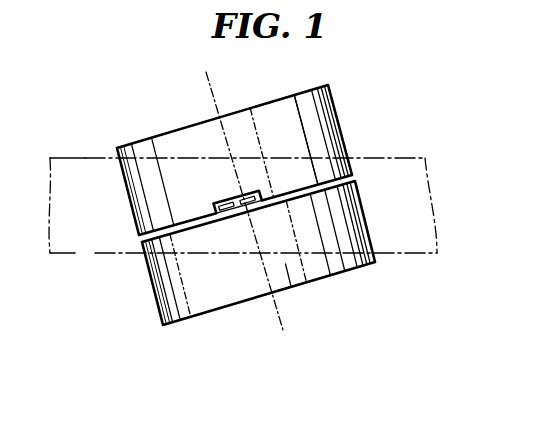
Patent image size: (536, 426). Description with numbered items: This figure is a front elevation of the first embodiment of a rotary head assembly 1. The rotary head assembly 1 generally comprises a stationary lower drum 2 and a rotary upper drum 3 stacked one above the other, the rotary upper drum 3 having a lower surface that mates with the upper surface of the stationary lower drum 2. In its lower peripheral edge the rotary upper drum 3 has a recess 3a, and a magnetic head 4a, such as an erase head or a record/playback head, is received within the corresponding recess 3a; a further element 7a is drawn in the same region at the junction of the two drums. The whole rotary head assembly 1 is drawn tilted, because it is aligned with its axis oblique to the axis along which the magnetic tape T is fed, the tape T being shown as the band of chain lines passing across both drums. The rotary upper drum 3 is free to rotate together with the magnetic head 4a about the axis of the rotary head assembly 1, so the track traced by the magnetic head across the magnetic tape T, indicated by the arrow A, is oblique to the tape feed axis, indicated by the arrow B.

The rotary head assembly 1 is at (154, 126).
The stationary lower drum 2 is at (233, 297).
The rotary upper drum 3 is at (288, 110).
The recess 3a is at (268, 187).
The magnetic head 4a is at (217, 202).
The sensor element 7a is at (258, 208).
The magnetic tape T is at (86, 247).
The arrow indicating track of magnetic head A is at (396, 118).
The arrow indicating tape feed axis B is at (419, 288).